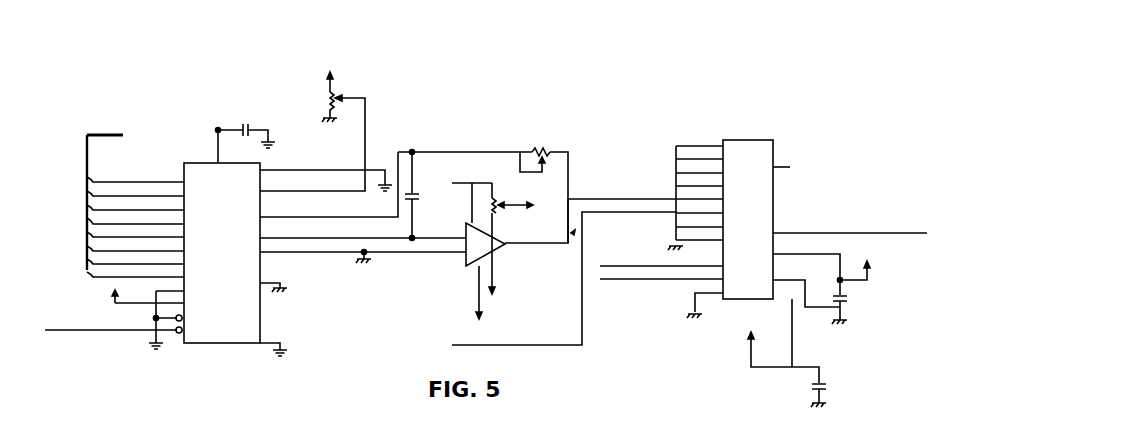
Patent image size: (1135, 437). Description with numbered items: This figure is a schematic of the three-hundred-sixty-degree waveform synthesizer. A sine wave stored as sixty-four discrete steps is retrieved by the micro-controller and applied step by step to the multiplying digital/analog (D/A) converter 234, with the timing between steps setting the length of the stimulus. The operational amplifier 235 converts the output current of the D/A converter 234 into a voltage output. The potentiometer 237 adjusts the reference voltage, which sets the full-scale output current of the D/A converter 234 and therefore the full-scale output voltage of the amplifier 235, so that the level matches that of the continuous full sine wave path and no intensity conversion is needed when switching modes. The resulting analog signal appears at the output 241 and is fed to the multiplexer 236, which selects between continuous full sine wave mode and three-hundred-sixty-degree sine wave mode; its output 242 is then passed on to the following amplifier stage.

The multiplying digital/analog (D/A) converter 234 is at (222, 267).
The operational amplifier 235 is at (492, 251).
The multiplexer 236 is at (748, 209).
The potentiometer 237 is at (346, 97).
The frequency synthesis section output 241 is at (622, 190).
The multiplexer output 242 is at (794, 157).